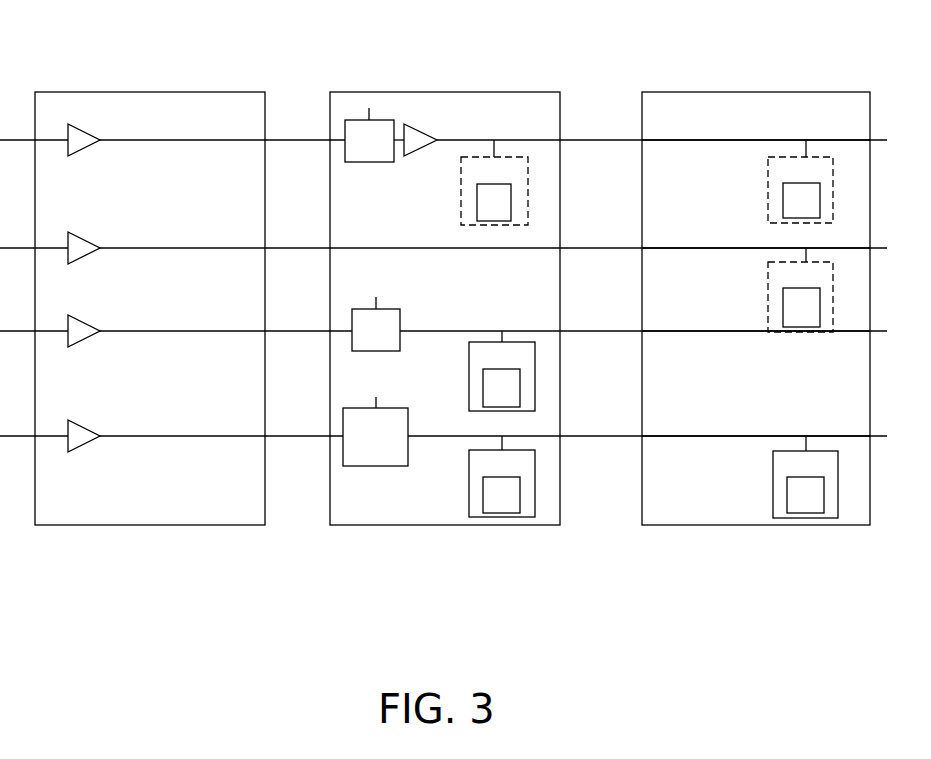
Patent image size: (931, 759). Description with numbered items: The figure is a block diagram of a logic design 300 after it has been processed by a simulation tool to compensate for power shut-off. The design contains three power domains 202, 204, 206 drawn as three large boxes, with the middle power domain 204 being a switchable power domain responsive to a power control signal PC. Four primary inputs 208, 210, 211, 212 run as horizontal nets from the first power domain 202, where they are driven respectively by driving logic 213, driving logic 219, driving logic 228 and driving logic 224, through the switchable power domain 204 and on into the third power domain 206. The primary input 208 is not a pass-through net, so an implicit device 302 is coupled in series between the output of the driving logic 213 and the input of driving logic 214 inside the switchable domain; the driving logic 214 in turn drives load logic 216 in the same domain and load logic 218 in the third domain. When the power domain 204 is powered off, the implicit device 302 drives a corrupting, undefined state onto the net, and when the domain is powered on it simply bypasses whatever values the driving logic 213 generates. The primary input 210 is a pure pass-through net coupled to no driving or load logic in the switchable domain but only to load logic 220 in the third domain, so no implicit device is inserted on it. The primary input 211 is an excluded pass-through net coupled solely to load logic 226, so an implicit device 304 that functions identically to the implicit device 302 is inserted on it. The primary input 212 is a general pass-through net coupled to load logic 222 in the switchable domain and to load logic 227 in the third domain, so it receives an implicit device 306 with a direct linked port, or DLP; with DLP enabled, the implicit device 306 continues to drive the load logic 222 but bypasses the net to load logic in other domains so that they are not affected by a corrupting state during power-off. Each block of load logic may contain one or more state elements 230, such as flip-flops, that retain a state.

The power domain 202 is at (150, 92).
The power domain 204 is at (400, 92).
The power domain 206 is at (680, 92).
The primary input 208 is at (289, 143).
The primary input 210 is at (289, 251).
The primary input 211 is at (291, 334).
The primary input 212 is at (291, 439).
The driving logic 213 is at (82, 132).
The driving logic 219 is at (84, 242).
The driving logic 228 is at (95, 323).
The driving logic 224 is at (88, 428).
The driving logic 214 is at (414, 128).
The load logic 216 is at (461, 180).
The load logic 218 is at (768, 188).
The load logic 220 is at (768, 292).
The load logic 222 is at (469, 492).
The load logic 226 is at (469, 370).
The load logic 227 is at (773, 462).
The state element 230 is at (477, 205).
The logic design 300 is at (657, 598).
The implicit device 302 is at (360, 120).
The implicit device 304 is at (400, 320).
The implicit device 306 is at (367, 467).